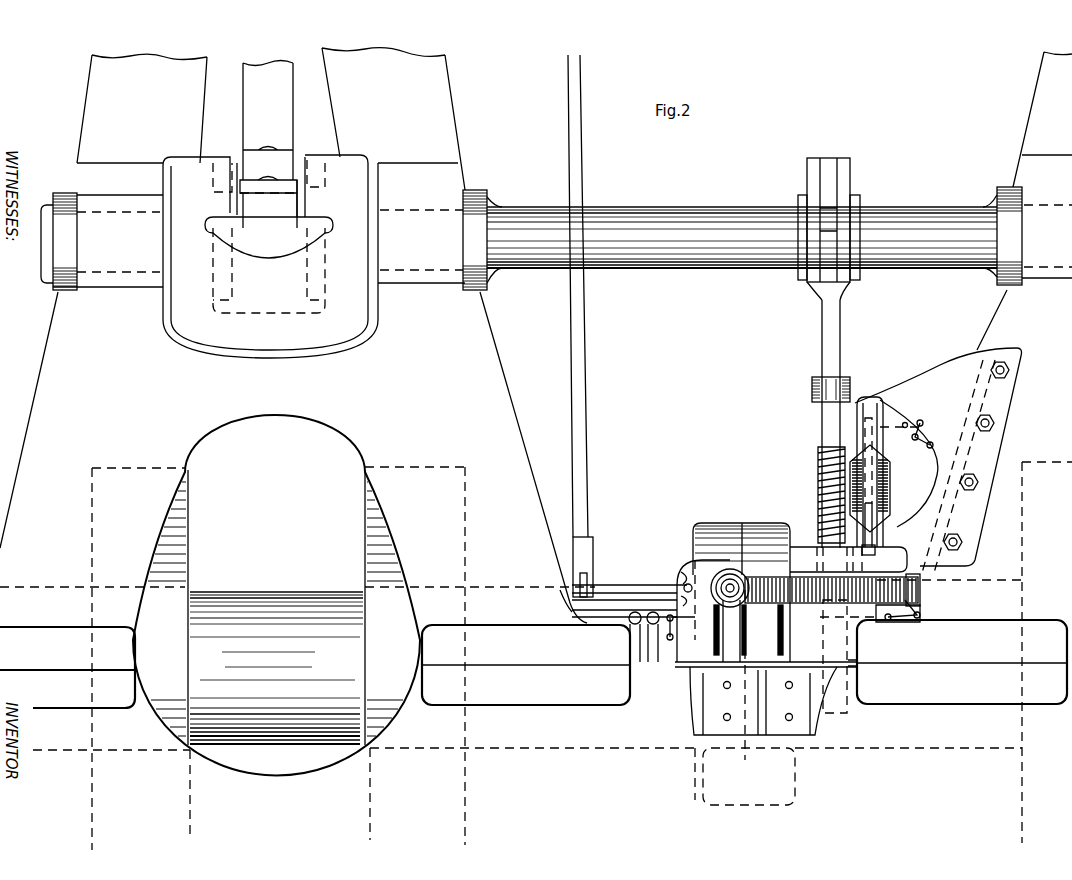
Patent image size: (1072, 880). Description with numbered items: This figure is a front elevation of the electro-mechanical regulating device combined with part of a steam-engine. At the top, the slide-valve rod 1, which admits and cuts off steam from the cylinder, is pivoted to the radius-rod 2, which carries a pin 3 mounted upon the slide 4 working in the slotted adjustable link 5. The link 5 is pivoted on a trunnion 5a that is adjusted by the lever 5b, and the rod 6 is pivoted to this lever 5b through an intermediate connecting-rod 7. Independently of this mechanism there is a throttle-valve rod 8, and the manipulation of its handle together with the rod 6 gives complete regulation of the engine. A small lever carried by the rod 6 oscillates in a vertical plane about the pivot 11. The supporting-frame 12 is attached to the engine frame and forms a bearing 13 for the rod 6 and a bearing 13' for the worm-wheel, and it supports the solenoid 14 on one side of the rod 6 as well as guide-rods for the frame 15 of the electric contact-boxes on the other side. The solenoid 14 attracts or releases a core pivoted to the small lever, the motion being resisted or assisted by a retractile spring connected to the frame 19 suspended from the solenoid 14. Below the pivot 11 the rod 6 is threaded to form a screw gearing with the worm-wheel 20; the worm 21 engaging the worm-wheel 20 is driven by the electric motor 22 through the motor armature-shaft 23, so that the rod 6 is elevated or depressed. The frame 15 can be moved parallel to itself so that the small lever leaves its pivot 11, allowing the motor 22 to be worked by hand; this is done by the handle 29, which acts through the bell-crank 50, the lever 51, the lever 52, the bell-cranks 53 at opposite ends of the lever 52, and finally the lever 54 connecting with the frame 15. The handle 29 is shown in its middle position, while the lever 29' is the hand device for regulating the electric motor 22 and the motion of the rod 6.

The slide-valve rod 1 is at (268, 121).
The radius-rod 2 is at (252, 178).
The pin 3 is at (269, 225).
The slide 4 is at (218, 170).
The slotted adjustable link 5 is at (269, 270).
The trunnion 5a is at (712, 216).
The lever 5b is at (853, 204).
The rod 6 is at (833, 358).
The intermediate connecting-rod 7 is at (832, 162).
The throttle-valve rod 8 is at (584, 403).
The pivot 11 is at (867, 425).
The supporting-frame 12 is at (938, 457).
The bearing 13 is at (810, 389).
The bearing 13' is at (848, 543).
The solenoid 14 is at (892, 486).
The frame 15 is at (886, 401).
The frame 19 is at (876, 549).
The worm-wheel 20 is at (920, 589).
The worm 21 is at (748, 578).
The electric motor 22 is at (725, 572).
The motor armature-shaft 23 is at (730, 594).
The handle 29 is at (648, 611).
The lever 29' is at (624, 611).
The bell-crank 50 is at (670, 612).
The lever 51 is at (692, 622).
The lever 52 is at (928, 503).
The bell-cranks 53 is at (924, 433).
The lever 54 is at (907, 425).